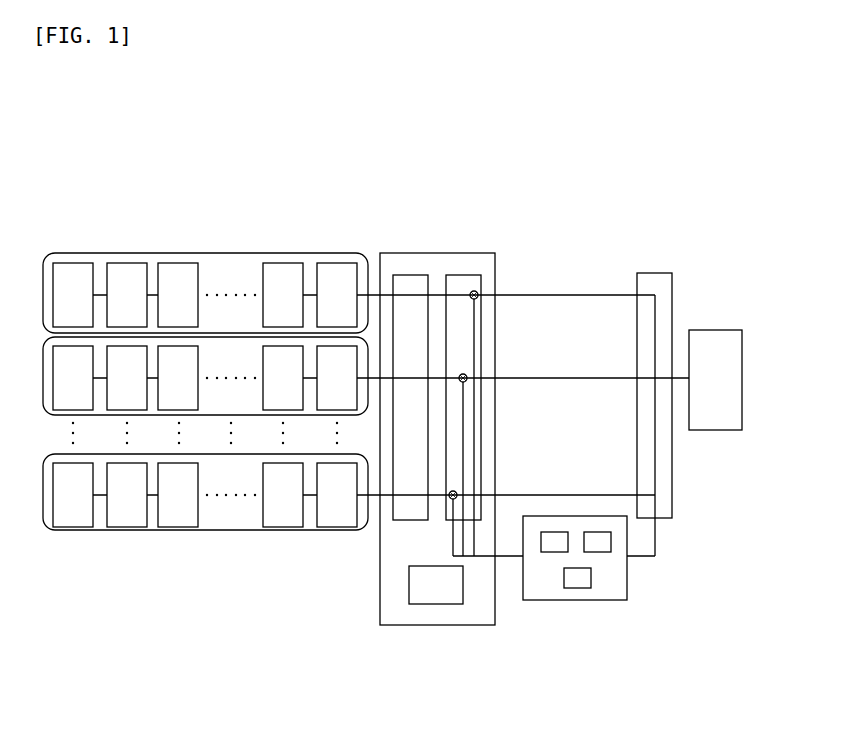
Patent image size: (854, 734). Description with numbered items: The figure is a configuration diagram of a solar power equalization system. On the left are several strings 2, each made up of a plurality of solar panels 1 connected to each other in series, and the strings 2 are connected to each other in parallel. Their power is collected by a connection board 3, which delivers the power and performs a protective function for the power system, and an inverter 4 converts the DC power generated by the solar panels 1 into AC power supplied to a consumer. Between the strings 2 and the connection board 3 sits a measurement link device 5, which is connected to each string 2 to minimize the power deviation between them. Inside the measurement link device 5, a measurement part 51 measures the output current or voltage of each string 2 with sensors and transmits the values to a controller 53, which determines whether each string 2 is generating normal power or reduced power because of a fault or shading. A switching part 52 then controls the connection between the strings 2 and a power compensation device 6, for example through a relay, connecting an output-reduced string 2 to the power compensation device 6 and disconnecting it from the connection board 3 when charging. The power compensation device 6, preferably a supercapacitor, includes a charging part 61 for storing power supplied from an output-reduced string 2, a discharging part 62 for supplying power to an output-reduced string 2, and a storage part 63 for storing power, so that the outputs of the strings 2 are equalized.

The solar panel 1 is at (73, 292).
The string 2 is at (222, 253).
The connection board 3 is at (656, 273).
The inverter 4 is at (716, 330).
The measurement link device 5 is at (444, 392).
The measurement part 51 is at (410, 274).
The switching part 52 is at (468, 274).
The controller 53 is at (413, 605).
The power compensation device 6 is at (606, 605).
The charging part 61 is at (555, 553).
The discharging part 62 is at (611, 552).
The storage part 63 is at (577, 588).